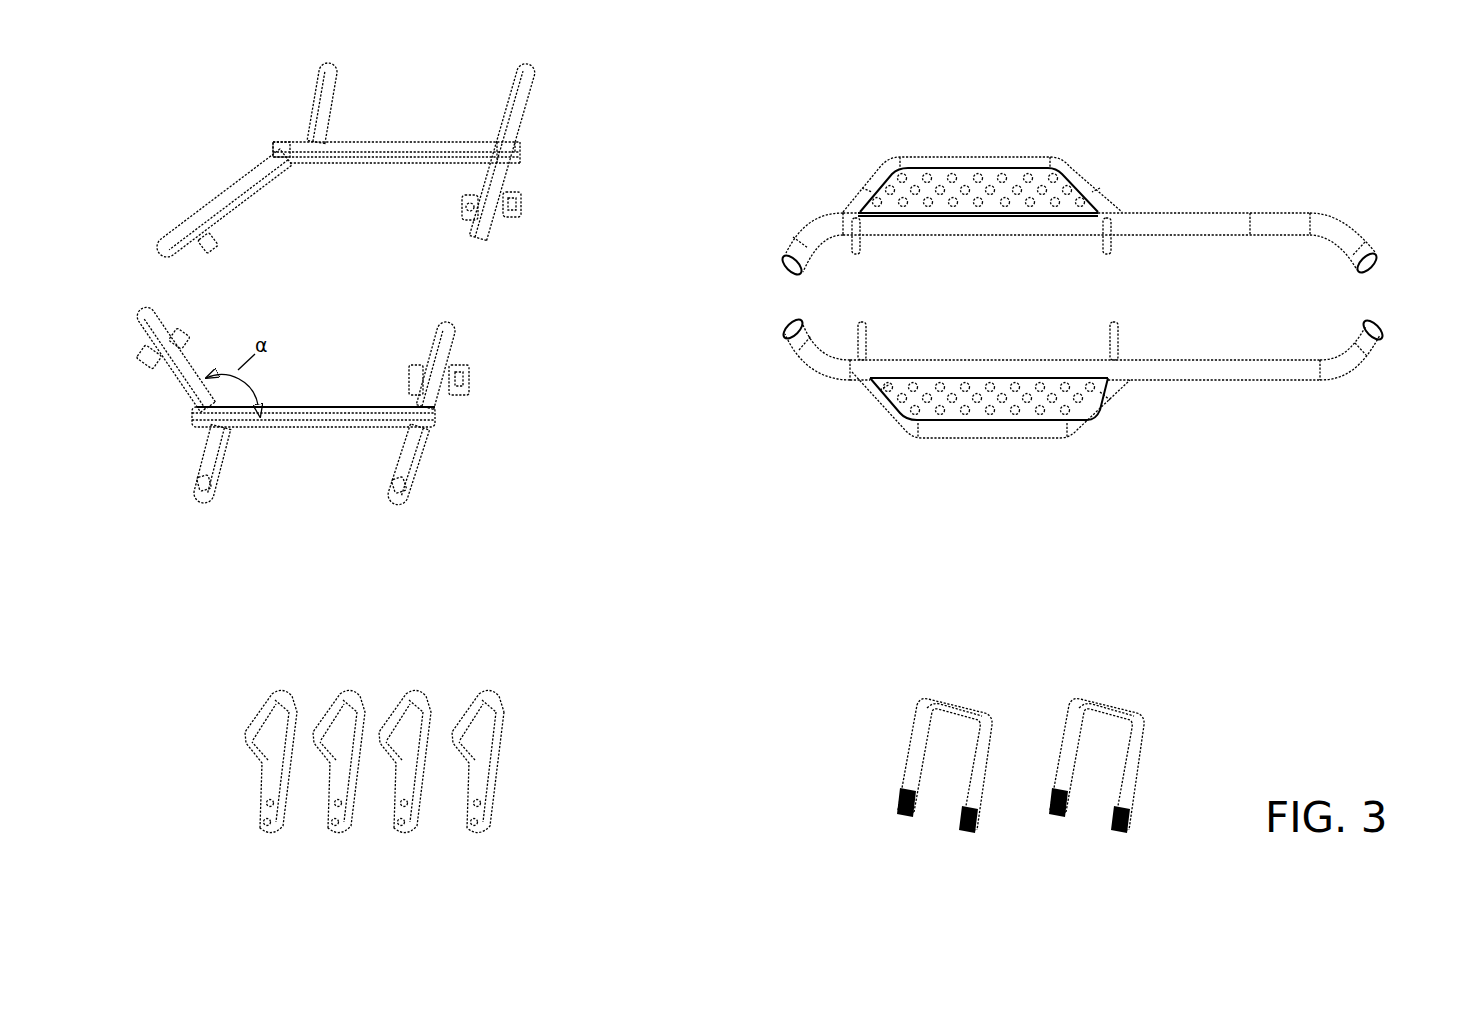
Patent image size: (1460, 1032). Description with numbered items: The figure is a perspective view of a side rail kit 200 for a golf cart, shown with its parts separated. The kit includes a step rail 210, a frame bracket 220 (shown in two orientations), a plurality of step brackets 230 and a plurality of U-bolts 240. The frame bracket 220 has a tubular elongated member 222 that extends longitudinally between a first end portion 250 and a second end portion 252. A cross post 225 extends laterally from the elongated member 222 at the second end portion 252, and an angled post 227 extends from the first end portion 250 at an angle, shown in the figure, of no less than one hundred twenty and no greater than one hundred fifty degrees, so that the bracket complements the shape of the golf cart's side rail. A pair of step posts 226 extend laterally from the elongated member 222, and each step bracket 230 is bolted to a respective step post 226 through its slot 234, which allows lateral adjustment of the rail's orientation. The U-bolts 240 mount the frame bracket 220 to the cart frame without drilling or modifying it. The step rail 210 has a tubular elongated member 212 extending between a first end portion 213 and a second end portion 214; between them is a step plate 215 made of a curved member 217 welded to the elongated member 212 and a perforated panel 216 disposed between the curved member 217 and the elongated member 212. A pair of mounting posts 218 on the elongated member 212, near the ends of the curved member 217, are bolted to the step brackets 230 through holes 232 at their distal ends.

The side rail kit 200 is at (152, 90).
The step rail 210 is at (1198, 228).
The elongated member 212 is at (1265, 225).
The first end portion 213 is at (779, 248).
The second end portion 214 is at (1379, 244).
The step plate 215 is at (878, 162).
The perforated panel 216 is at (1055, 187).
The curved member 217 is at (973, 163).
The mounting posts 218 is at (1103, 237).
The frame bracket 220 is at (338, 170).
The elongated member 222 is at (366, 150).
The cross post 225 is at (490, 183).
The step posts 226 is at (305, 121).
The angled post 227 is at (207, 220).
The step brackets 230 is at (338, 737).
The holes 232 is at (472, 836).
The slot 234 is at (466, 722).
The U-bolts 240 is at (1077, 717).
The first end portion 250 is at (268, 146).
The second end portion 252 is at (522, 154).